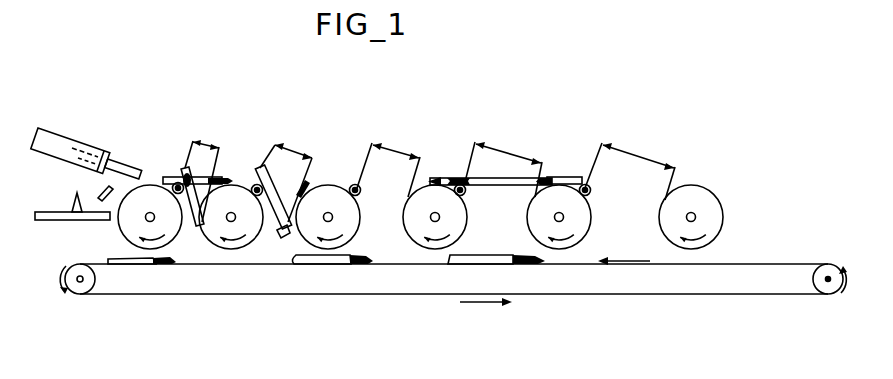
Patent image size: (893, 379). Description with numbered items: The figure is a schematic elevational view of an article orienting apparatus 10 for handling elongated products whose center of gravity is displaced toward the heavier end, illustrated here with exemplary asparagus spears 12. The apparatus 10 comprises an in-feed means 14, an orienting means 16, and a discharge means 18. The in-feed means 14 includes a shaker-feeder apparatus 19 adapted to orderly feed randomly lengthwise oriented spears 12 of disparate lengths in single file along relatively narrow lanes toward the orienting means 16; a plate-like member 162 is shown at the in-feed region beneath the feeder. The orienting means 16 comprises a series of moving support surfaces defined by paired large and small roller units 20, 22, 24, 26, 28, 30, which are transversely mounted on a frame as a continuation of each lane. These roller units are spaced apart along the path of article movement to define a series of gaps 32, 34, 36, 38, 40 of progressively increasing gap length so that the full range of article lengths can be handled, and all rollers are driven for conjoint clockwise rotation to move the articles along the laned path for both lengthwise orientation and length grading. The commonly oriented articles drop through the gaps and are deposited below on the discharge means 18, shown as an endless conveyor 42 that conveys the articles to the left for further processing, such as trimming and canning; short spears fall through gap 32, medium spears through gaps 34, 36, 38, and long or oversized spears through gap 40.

The article orienting apparatus 10 is at (456, 86).
The asparagus spears 12 is at (109, 157).
The in-feed means 14 is at (48, 124).
The orienting means 16 is at (106, 233).
The plate extension 162 is at (53, 222).
The discharge means 18 is at (161, 301).
The shaker-feeder apparatus 19 is at (78, 142).
The roller unit 20 is at (157, 180).
The roller unit 22 is at (240, 178).
The roller unit 24 is at (333, 178).
The roller unit 26 is at (440, 178).
The roller unit 28 is at (563, 172).
The roller unit 30 is at (700, 179).
The gap 32 is at (206, 143).
The gap 34 is at (288, 145).
The gap 36 is at (388, 146).
The gap 38 is at (493, 146).
The gap 40 is at (625, 146).
The endless conveyor 42 is at (368, 267).